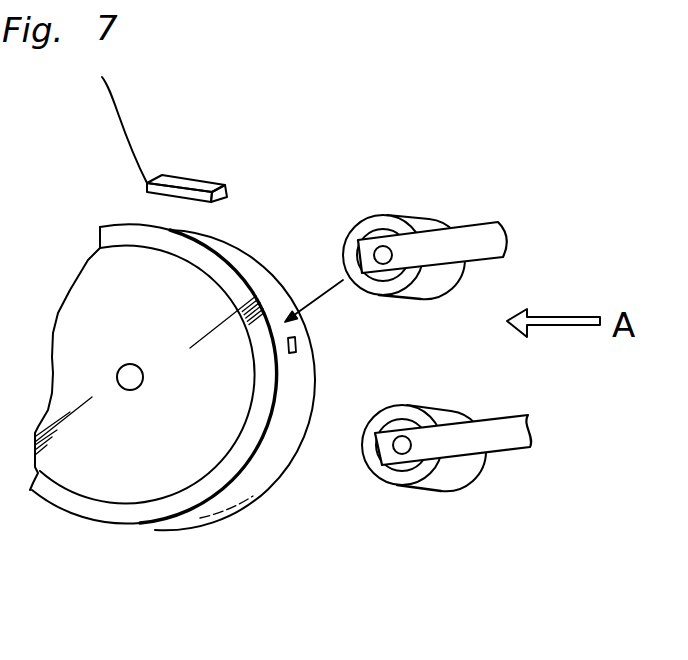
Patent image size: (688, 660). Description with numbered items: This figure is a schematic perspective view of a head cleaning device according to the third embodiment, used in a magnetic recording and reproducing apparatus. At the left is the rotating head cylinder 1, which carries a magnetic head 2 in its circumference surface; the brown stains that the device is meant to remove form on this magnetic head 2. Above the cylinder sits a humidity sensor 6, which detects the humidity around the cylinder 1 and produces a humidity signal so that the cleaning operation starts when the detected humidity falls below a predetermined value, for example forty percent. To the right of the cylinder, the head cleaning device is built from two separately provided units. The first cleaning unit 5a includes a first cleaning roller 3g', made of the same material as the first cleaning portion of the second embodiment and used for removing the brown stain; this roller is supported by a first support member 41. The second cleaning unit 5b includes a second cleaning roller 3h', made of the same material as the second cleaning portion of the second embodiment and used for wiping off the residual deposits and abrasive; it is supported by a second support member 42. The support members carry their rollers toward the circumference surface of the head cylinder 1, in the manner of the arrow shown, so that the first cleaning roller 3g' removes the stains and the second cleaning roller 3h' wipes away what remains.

The rotating head cylinder 1 is at (137, 490).
The magnetic head 2 is at (297, 347).
The humidity sensor 6 is at (185, 178).
The second cleaning roller 3h' is at (427, 228).
The second support member 42 is at (507, 223).
The second cleaning unit 5b is at (468, 200).
The first cleaning roller 3g' is at (424, 490).
The first support member 41 is at (483, 444).
The first cleaning unit 5a is at (413, 517).